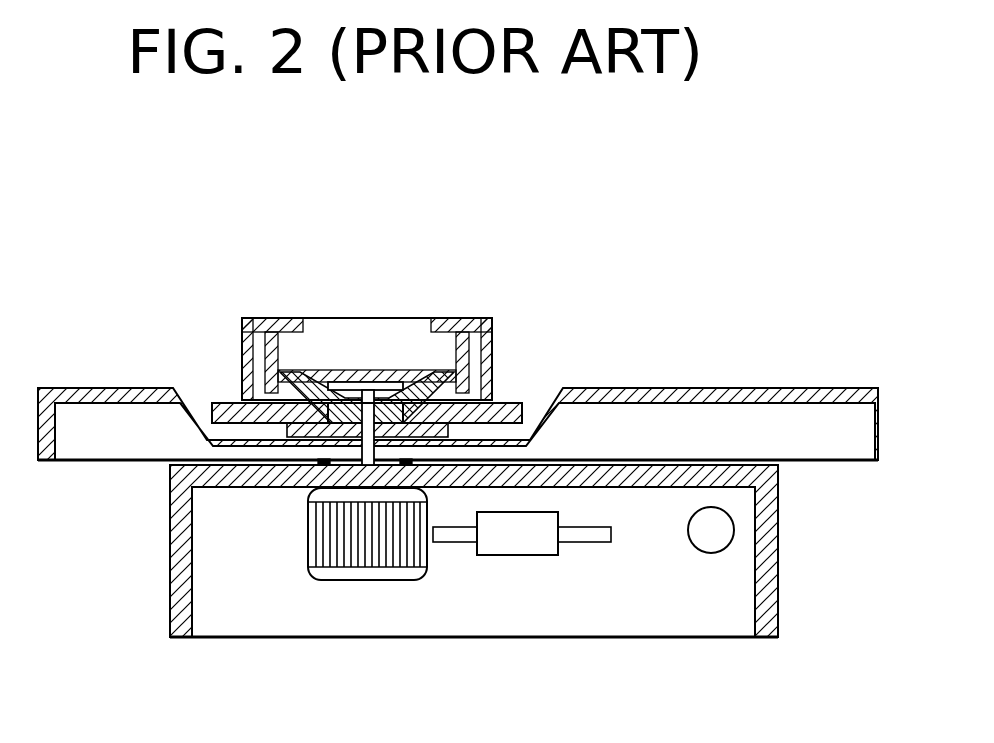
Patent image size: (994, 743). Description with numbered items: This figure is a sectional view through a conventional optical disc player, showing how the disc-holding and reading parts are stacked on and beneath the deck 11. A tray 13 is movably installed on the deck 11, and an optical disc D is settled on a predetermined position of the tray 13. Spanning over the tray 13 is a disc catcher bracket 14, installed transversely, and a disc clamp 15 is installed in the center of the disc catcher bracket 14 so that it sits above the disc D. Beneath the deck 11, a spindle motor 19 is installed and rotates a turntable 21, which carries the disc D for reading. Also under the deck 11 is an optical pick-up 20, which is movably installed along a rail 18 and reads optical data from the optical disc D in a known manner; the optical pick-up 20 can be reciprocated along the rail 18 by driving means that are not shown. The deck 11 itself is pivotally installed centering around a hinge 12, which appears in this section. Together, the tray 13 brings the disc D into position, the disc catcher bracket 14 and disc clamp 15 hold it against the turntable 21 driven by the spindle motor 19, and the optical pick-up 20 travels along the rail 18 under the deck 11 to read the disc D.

The deck 11 is at (778, 543).
The hinge 12 is at (715, 532).
The tray 13 is at (725, 390).
The disc catcher bracket 14 is at (473, 318).
The disc clamp 15 is at (392, 383).
The rail 18 is at (590, 532).
The spindle motor 19 is at (307, 540).
The optical pick-up 20 is at (515, 540).
The turntable 21 is at (343, 417).
The optical disc D is at (228, 400).